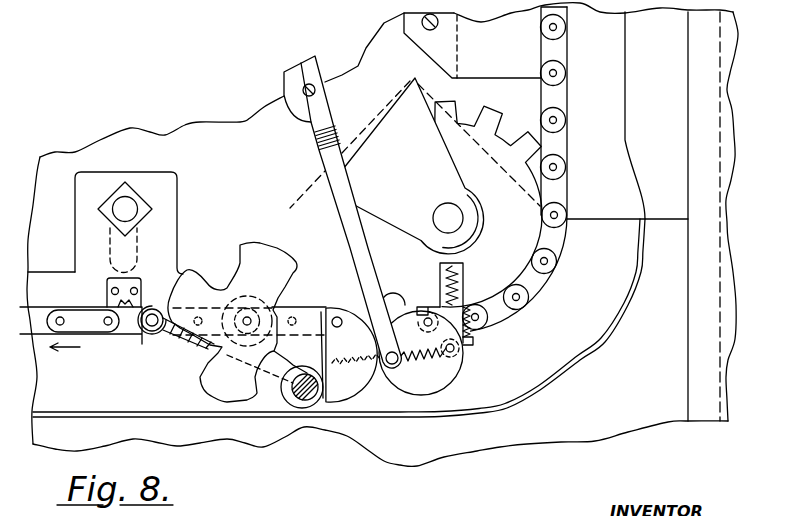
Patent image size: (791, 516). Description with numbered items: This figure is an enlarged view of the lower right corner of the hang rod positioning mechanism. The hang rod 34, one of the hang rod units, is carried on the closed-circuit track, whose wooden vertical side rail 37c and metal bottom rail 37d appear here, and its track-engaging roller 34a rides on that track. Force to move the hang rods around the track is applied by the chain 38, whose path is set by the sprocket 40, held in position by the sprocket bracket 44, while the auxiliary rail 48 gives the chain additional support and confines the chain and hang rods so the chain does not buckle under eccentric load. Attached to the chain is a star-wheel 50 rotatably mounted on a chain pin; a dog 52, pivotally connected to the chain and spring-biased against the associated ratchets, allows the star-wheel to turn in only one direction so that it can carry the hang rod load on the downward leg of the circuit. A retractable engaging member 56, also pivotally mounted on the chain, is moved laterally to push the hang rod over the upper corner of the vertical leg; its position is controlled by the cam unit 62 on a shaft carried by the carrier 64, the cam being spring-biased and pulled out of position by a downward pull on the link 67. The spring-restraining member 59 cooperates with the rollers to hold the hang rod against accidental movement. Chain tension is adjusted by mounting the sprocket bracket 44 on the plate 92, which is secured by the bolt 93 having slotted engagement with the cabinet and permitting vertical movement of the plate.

The hang rod 34 is at (295, 393).
The track-engaging roller 34a is at (308, 405).
The vertical side rail 37c is at (632, 97).
The bottom rail 37d is at (601, 341).
The chain 38 is at (557, 73).
The sprocket 40 is at (520, 243).
The sprocket bracket 44 is at (418, 173).
The auxiliary rail 48 is at (508, 61).
The star-wheel 50 is at (203, 382).
The dog 52 is at (158, 351).
The retractable engaging member 56 is at (367, 387).
The spring-restraining member 59 is at (257, 368).
The cam unit 62 is at (463, 374).
The carrier 64 is at (440, 288).
The link 67 is at (333, 118).
The plate 92 is at (178, 195).
The bolt 93 is at (152, 209).